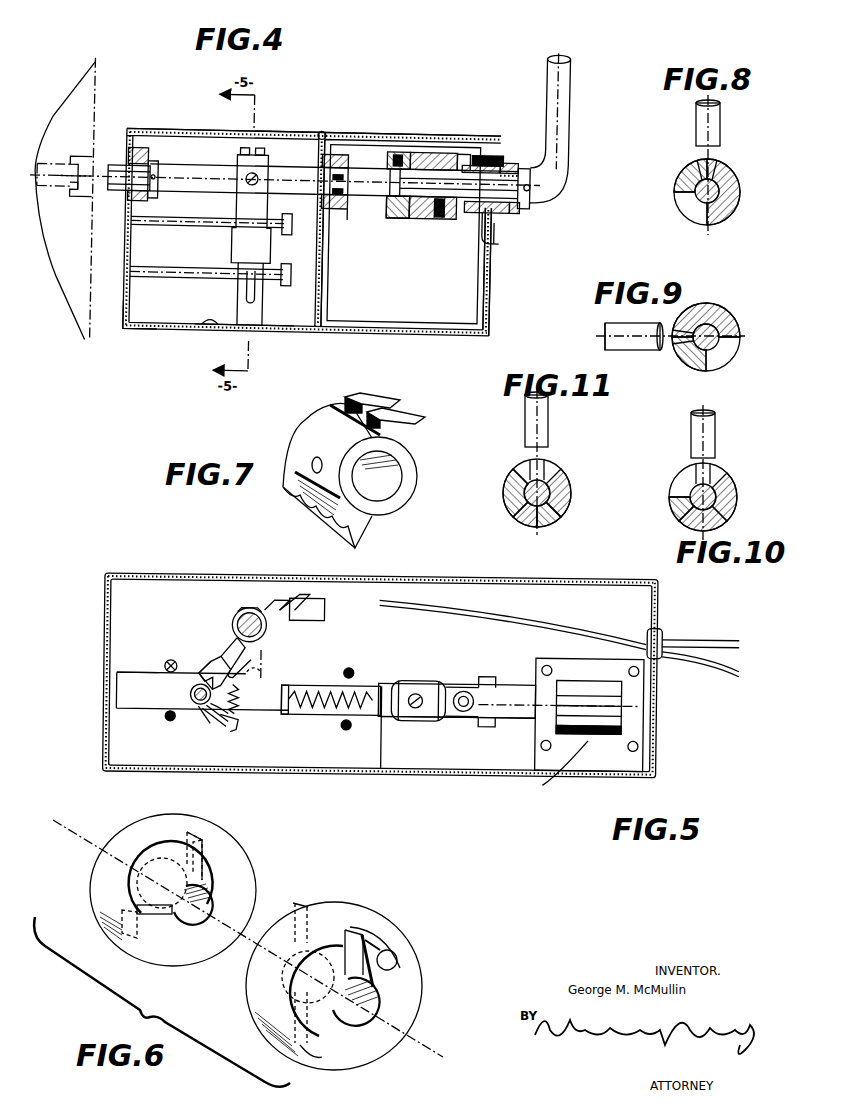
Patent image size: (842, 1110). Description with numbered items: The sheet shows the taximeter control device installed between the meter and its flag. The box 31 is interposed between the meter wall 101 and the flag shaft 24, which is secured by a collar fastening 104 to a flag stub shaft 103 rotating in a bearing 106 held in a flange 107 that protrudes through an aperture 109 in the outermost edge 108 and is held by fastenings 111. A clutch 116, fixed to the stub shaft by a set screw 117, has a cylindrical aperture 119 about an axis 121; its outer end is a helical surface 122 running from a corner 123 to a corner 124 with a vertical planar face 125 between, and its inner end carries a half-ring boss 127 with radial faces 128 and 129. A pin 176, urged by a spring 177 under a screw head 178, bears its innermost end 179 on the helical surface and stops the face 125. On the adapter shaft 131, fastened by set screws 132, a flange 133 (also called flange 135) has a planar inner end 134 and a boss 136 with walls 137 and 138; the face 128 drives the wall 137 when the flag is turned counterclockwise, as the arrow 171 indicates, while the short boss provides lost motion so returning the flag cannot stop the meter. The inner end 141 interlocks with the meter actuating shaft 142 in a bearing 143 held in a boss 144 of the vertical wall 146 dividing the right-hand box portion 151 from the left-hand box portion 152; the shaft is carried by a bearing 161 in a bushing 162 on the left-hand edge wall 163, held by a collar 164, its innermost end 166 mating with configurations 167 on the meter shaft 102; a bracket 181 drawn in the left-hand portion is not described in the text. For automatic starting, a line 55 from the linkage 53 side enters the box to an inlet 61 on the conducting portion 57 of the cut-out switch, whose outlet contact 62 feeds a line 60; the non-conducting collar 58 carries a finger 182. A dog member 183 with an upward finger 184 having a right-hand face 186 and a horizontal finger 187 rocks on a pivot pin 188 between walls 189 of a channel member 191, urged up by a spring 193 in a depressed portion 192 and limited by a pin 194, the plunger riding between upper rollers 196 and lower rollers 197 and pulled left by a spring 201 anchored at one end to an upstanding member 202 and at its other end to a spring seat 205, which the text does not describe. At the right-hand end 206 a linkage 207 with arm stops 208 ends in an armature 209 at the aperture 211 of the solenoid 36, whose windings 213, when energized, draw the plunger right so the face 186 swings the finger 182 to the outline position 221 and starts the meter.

In FIG. 4, the vertical edge of the meter 101 is at (93, 92).
In FIG. 4, the meter shaft 102 is at (70, 156).
In FIG. 4, the configurations on the meter drive shaft 167 is at (76, 192).
In FIG. 4, the bearing 161 is at (126, 198).
In FIG. 4, the left-hand edge wall 163 is at (126, 316).
In FIG. 4, the box 31 is at (270, 126).
In FIG. 4, the vertical wall 146 is at (324, 288).
In FIG. 4, the right-hand box portion 151 is at (418, 298).
In FIG. 4, the left-hand box portion 152 is at (180, 305).
In FIG. 4, the outermost edge of the box 108 is at (492, 280).
In FIG. 4, the adapter shaft 131 is at (370, 192).
In FIG. 4, the innermost end of the meter actuating shaft 166 is at (120, 165).
In FIG. 4, the collar 164 is at (155, 160).
In FIG. 4, the bushing 162 is at (134, 147).
In FIG. 4, the bracket 181 is at (268, 168).
In FIG. 4, the opposite walls of the channel member 189 is at (238, 234).
In FIG. 5, the opposite walls of the channel member 189 is at (155, 672).
In FIG. 4, the upper rollers 196 is at (163, 225).
In FIG. 5, the upper rollers 196 is at (178, 655).
In FIG. 4, the lower supporting rollers 197 is at (200, 267).
In FIG. 5, the lower supporting rollers 197 is at (172, 720).
In FIG. 4, the channel member 191 is at (285, 264).
In FIG. 5, the channel member 191 is at (155, 710).
In FIG. 4, the inner end of the adapter shaft 141 is at (338, 150).
In FIG. 4, the meter actuating shaft 142 is at (321, 127).
In FIG. 11, the meter actuating shaft 142 is at (562, 512).
In FIG. 10, the meter actuating shaft 142 is at (728, 516).
In FIG. 5, the meter actuating shaft 142 is at (246, 608).
In FIG. 4, the bearing 143 is at (333, 193).
In FIG. 4, the boss 144 is at (347, 216).
In FIG. 4, the set screws 132 is at (400, 146).
In FIG. 4, the inner end of the flange 134 is at (393, 151).
In FIG. 4, the flange 133 is at (396, 213).
In FIG. 4, the clutch 116 is at (436, 146).
In FIG. 6, the clutch 116 is at (345, 912).
In FIG. 4, the set screw 117 is at (438, 211).
In FIG. 4, the flag stub shaft 103 is at (470, 192).
In FIG. 4, the innermost end of the pin 179 is at (465, 145).
In FIG. 4, the spring 177 is at (500, 148).
In FIG. 4, the pin 176 is at (490, 158).
In FIG. 6, the pin 176 is at (398, 958).
In FIG. 4, the screw head 178 is at (514, 155).
In FIG. 4, the flange 107 is at (478, 206).
In FIG. 4, the bearing 106 is at (514, 206).
In FIG. 4, the aperture 109 is at (483, 232).
In FIG. 4, the fastenings 111 is at (496, 236).
In FIG. 4, the collar fastening 104 is at (530, 192).
In FIG. 4, the flag shaft 24 is at (570, 96).
In FIG. 8, the flag shaft 24 is at (720, 125).
In FIG. 9, the flag shaft 24 is at (622, 350).
In FIG. 11, the flag shaft 24 is at (548, 418).
In FIG. 10, the flag shaft 24 is at (716, 424).
In FIG. 8, the face of the boss 128 is at (716, 168).
In FIG. 9, the face of the boss 128 is at (705, 303).
In FIG. 11, the face of the boss 128 is at (556, 475).
In FIG. 6, the face of the boss 128 is at (300, 898).
In FIG. 8, the radially vertical wall 137 is at (698, 168).
In FIG. 9, the radially vertical wall 137 is at (690, 346).
In FIG. 11, the radially vertical wall 137 is at (515, 485).
In FIG. 10, the radially vertical wall 137 is at (686, 492).
In FIG. 6, the radially vertical wall 137 is at (205, 836).
In FIG. 8, the boss 136 is at (680, 182).
In FIG. 9, the boss 136 is at (700, 365).
In FIG. 11, the boss 136 is at (508, 505).
In FIG. 10, the boss 136 is at (676, 508).
In FIG. 6, the boss 136 is at (172, 842).
In FIG. 9, the boss 127 is at (728, 310).
In FIG. 6, the boss 127 is at (318, 897).
In FIG. 9, the arrow 171 is at (612, 322).
In FIG. 7, the conducting portion 57 is at (417, 453).
In FIG. 5, the conducting portion 57 is at (254, 606).
In FIG. 7, the non-conducting collar 58 is at (416, 479).
In FIG. 5, the non-conducting collar 58 is at (268, 620).
In FIG. 7, the outlet contact 62 is at (370, 398).
In FIG. 5, the outlet contact 62 is at (302, 592).
In FIG. 7, the inlet 61 is at (420, 415).
In FIG. 5, the inlet 61 is at (274, 598).
In FIG. 7, the finger 182 is at (288, 497).
In FIG. 5, the finger 182 is at (235, 638).
In FIG. 5, the solenoid 36 is at (640, 726).
In FIG. 5, the aperture 211 is at (625, 704).
In FIG. 5, the windings 213 is at (560, 785).
In FIG. 5, the line 55 is at (378, 596).
In FIG. 5, the line 60 is at (333, 596).
In FIG. 5, the linkage 53 is at (740, 668).
In FIG. 5, the right-hand face 186 is at (222, 655).
In FIG. 5, the first upwardly projecting finger 184 is at (210, 658).
In FIG. 5, the dog member 183 is at (204, 676).
In FIG. 5, the outline position of the finger 221 is at (268, 660).
In FIG. 5, the pin 194 is at (192, 693).
In FIG. 5, the second horizontally projecting finger 187 is at (242, 697).
In FIG. 5, the pivot pin 188 is at (200, 710).
In FIG. 5, the cut-out and depressed portion 192 is at (222, 724).
In FIG. 5, the spring 193 is at (240, 722).
In FIG. 5, the spring 201 is at (322, 686).
In FIG. 5, the spring seat 205 is at (287, 683).
In FIG. 5, the upstanding member 202 is at (384, 740).
In FIG. 5, the armature 209 is at (515, 683).
In FIG. 5, the right-hand end of the plunger 206 is at (405, 677).
In FIG. 5, the linkage 207 is at (455, 685).
In FIG. 5, the arm stops 208 is at (488, 672).
In FIG. 6, the flange 135 is at (92, 888).
In FIG. 6, the second radial wall 138 is at (122, 938).
In FIG. 6, the cylindrical aperture 119 is at (378, 997).
In FIG. 6, the axis 121 is at (390, 1020).
In FIG. 6, the corner 124 is at (362, 930).
In FIG. 6, the vertical radially disposed line 123 is at (370, 935).
In FIG. 6, the vertical planar face 125 is at (396, 952).
In FIG. 6, the face of the boss 129 is at (290, 1040).
In FIG. 6, the helical surface 122 is at (320, 1058).